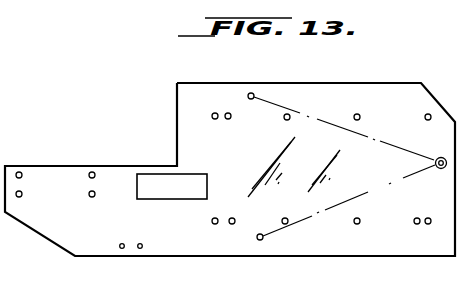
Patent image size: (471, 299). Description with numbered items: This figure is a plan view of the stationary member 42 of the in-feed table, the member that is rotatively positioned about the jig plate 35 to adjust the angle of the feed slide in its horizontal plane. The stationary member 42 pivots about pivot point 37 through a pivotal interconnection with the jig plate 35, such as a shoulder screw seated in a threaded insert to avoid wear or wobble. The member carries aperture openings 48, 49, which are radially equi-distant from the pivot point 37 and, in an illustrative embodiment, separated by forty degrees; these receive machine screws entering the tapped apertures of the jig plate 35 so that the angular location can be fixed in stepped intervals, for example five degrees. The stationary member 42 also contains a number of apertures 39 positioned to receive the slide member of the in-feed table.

The jig plate 35 is at (227, 169).
The stationary member 42 is at (324, 91).
The aperture opening 48 is at (256, 92).
The aperture opening 49 is at (260, 240).
The pivot point 37 is at (437, 169).
The apertures 39 is at (227, 119).